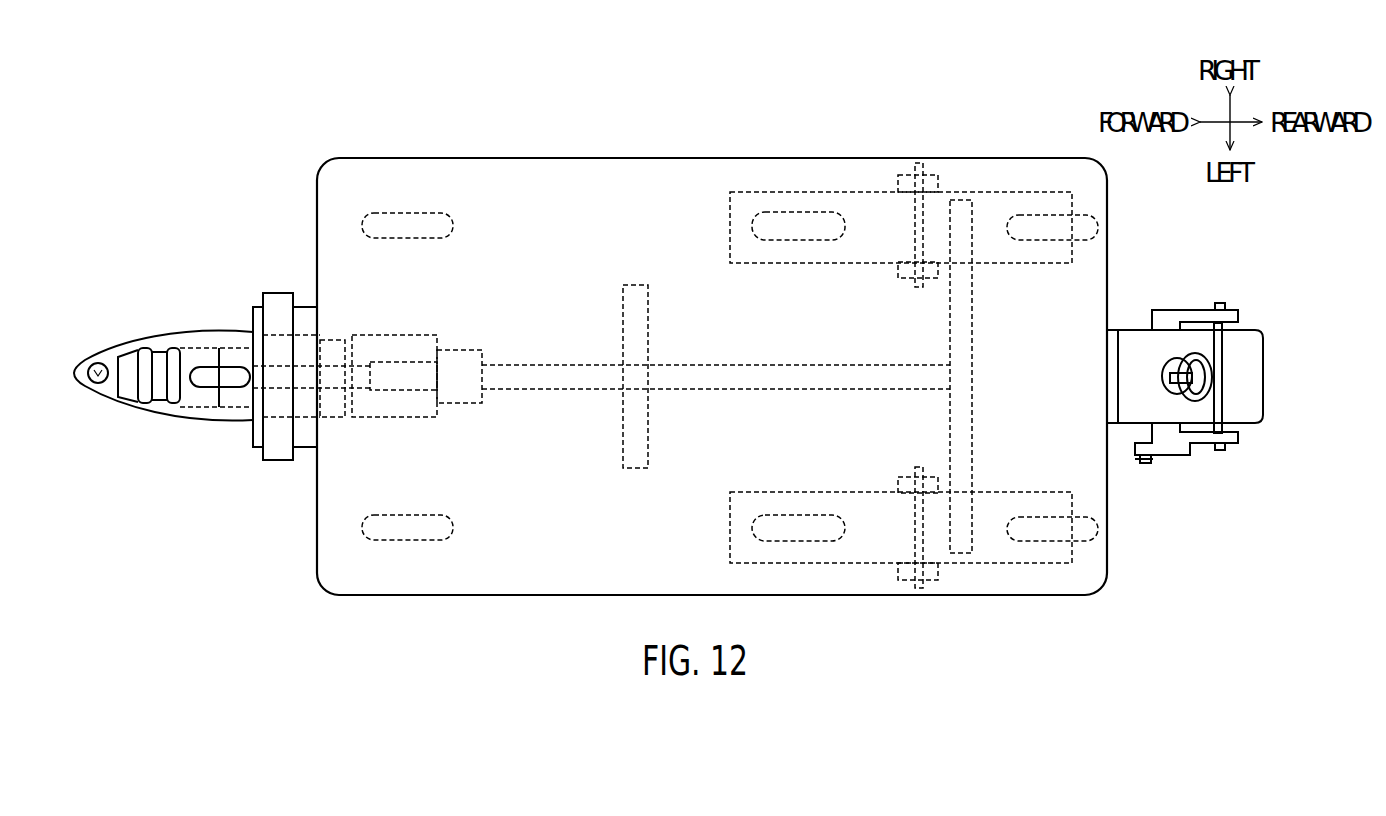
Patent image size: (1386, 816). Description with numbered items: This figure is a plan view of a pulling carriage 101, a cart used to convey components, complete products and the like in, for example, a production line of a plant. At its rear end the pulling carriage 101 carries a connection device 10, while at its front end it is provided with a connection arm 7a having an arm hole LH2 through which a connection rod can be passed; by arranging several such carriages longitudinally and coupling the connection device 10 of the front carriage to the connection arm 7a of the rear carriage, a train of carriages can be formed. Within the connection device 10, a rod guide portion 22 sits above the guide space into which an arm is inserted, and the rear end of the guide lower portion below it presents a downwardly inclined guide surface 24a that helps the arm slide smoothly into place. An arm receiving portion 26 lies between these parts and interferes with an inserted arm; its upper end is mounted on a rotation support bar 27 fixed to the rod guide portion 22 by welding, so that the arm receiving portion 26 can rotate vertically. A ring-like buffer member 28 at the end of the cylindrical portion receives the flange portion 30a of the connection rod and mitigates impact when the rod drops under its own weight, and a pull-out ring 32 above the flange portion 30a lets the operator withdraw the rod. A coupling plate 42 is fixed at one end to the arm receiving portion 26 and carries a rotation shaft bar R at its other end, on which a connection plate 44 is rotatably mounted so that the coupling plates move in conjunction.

The pulling carriage 101 is at (641, 130).
The connection arm 7a is at (158, 348).
The arm hole LH2 is at (97, 362).
The connection device 10 is at (1277, 348).
The rod guide portion 22 is at (1135, 348).
The guide surface 24a is at (1250, 345).
The arm receiving portion 26 is at (1173, 314).
The rotation support bar 27 is at (1225, 376).
The buffer member 28 is at (1165, 372).
The flange portion 30a is at (1172, 388).
The pull-out ring 32 is at (1208, 396).
The coupling plate 42 is at (1172, 452).
The connection plate 44 is at (1137, 466).
The rotation shaft bar R is at (1146, 466).